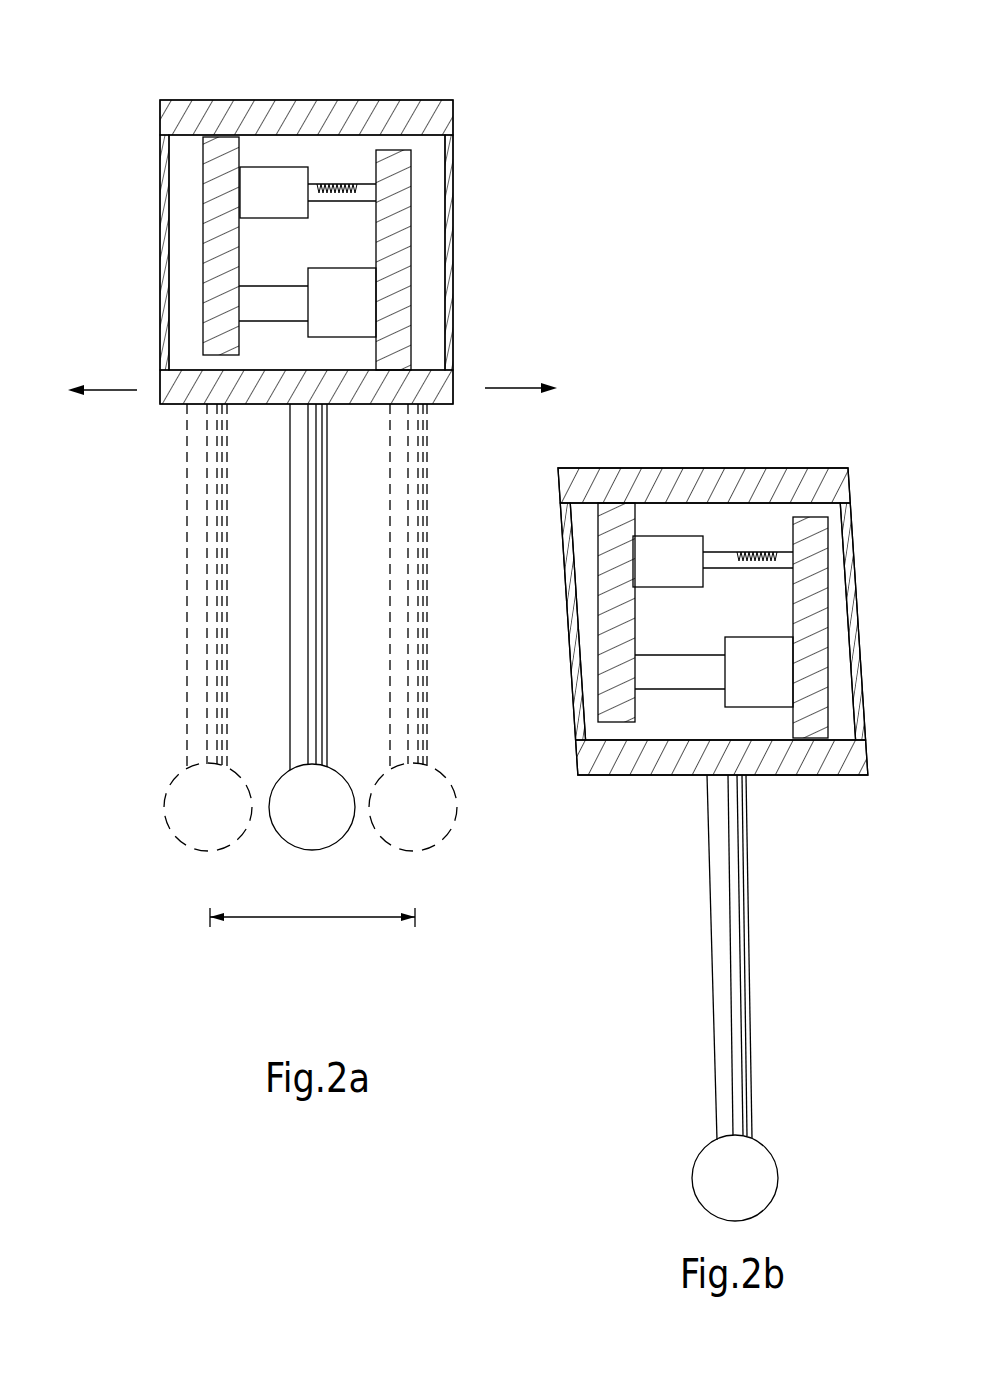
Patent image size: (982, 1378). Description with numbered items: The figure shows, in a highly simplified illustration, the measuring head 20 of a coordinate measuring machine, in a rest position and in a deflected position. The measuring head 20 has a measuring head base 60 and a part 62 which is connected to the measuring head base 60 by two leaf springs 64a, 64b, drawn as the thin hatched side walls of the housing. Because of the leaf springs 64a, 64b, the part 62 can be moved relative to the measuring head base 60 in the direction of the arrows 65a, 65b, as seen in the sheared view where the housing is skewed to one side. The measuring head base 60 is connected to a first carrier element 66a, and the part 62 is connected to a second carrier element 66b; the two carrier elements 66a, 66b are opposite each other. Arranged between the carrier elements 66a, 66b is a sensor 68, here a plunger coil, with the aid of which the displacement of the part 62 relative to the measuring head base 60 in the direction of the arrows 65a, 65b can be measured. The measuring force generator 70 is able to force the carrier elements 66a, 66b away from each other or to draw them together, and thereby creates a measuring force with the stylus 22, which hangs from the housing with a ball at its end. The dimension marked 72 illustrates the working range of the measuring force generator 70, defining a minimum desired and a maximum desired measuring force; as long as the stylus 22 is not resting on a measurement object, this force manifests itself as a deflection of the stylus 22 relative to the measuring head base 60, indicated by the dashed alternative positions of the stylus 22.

The measuring head 20 is at (478, 165).
The stylus 22 is at (288, 587).
The measuring head base 60 is at (365, 100).
The part 62 is at (180, 407).
The leaf spring 64a is at (167, 167).
The leaf spring 64b is at (453, 218).
The arrow 65a is at (112, 390).
The arrow 65b is at (512, 388).
The first carrier element 66a is at (218, 208).
The second carrier element 66b is at (392, 283).
The sensor 68 is at (270, 190).
The measuring force generator 70 is at (276, 300).
The working range 72 is at (295, 920).